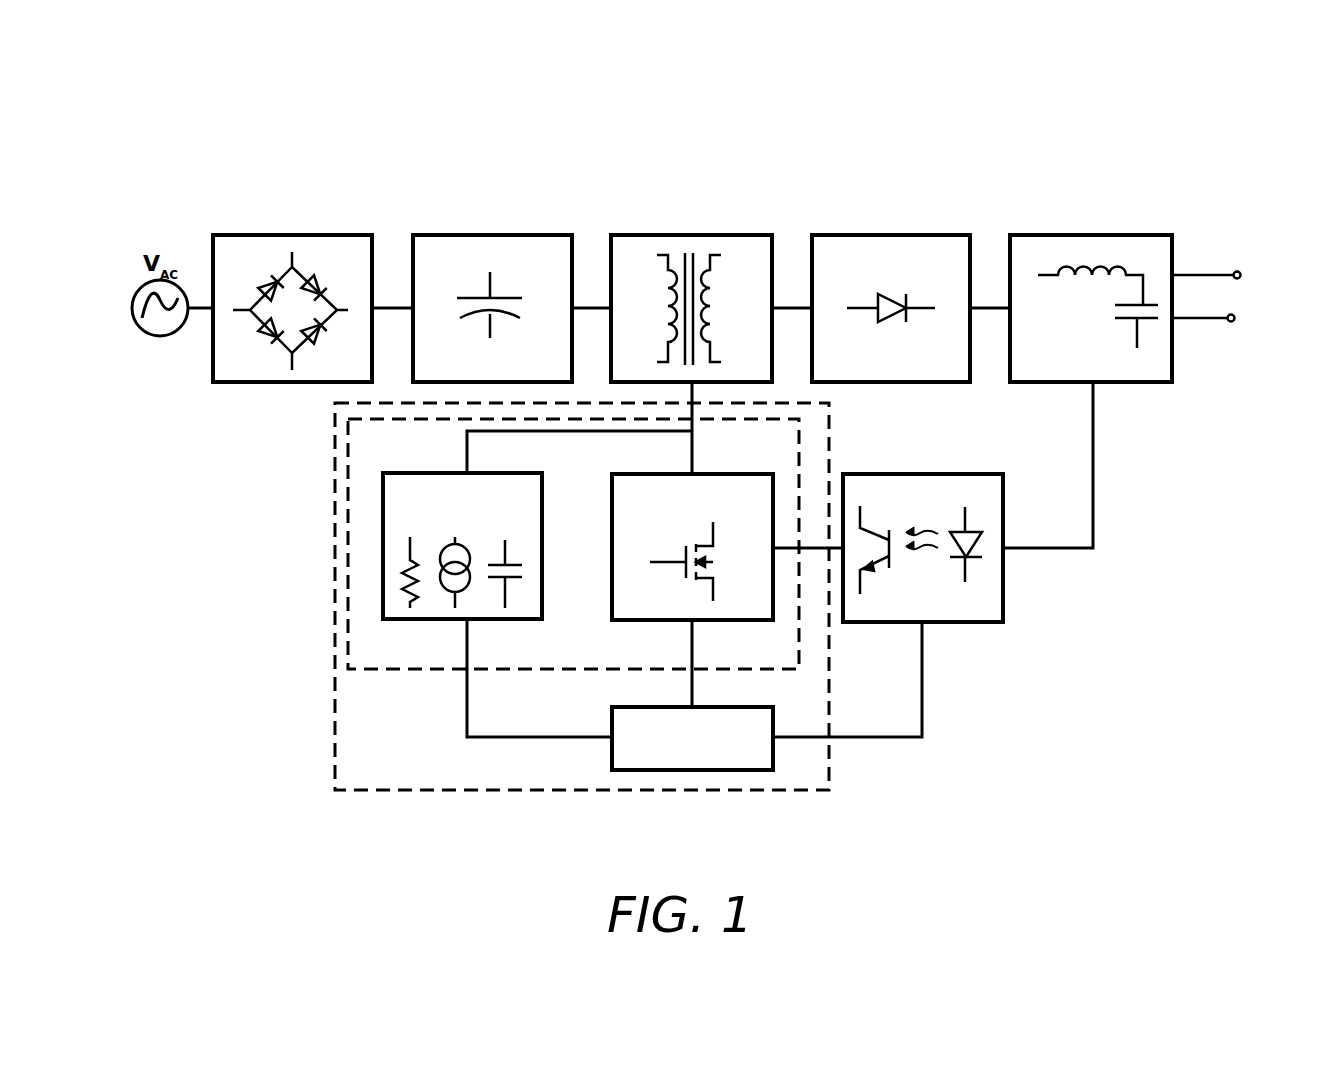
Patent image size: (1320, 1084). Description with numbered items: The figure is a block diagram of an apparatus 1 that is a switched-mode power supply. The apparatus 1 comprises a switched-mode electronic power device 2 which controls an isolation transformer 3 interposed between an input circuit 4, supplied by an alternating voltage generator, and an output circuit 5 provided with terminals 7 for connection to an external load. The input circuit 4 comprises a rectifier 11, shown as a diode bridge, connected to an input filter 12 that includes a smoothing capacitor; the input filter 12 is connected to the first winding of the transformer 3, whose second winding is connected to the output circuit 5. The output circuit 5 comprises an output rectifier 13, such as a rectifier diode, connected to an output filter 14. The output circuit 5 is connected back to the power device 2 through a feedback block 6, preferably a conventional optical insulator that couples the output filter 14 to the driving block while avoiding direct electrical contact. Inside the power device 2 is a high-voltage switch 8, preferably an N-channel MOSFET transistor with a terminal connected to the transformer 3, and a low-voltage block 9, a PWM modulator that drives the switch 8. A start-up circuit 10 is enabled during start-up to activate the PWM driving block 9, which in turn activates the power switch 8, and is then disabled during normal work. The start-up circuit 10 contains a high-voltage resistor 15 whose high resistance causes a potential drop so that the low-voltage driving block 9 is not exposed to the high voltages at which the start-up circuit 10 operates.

The apparatus 1 is at (230, 583).
The switched-mode electronic power device 2 is at (334, 694).
The isolation transformer 3 is at (614, 235).
The input circuit 4 is at (240, 193).
The output circuit 5 is at (1154, 185).
The feedback block 6 is at (1003, 614).
The terminals 7 is at (1244, 283).
The high-voltage switch 8 is at (610, 486).
The low-voltage block 9 is at (745, 770).
The start-up circuit 10 is at (390, 470).
The rectifier 11 is at (221, 383).
The input filter 12 is at (412, 235).
The output rectifier 13 is at (810, 235).
The output filter 14 is at (1168, 382).
The high-voltage resistor 15 is at (412, 600).